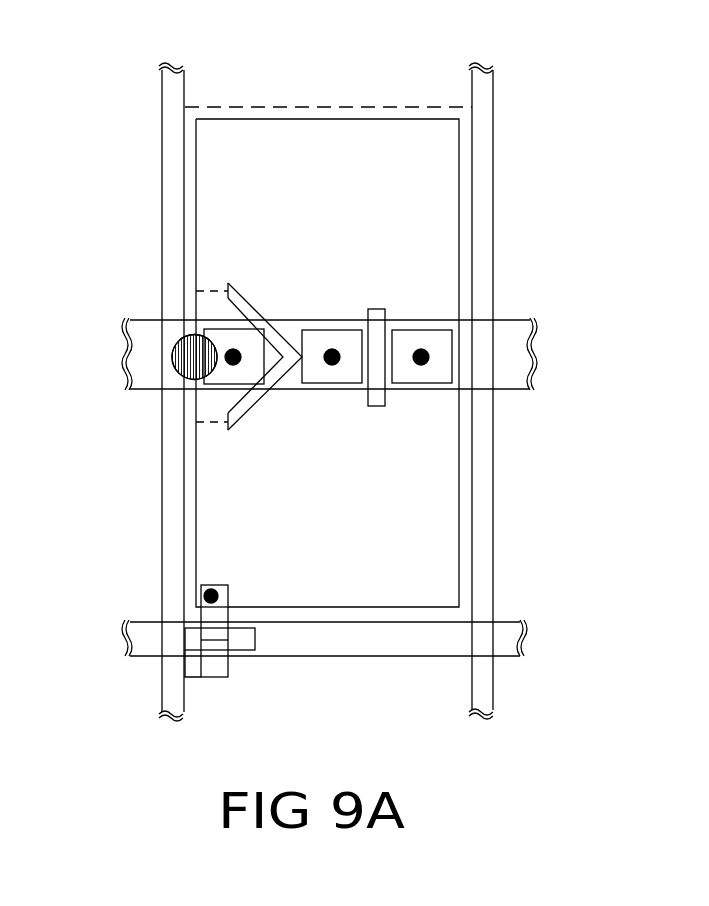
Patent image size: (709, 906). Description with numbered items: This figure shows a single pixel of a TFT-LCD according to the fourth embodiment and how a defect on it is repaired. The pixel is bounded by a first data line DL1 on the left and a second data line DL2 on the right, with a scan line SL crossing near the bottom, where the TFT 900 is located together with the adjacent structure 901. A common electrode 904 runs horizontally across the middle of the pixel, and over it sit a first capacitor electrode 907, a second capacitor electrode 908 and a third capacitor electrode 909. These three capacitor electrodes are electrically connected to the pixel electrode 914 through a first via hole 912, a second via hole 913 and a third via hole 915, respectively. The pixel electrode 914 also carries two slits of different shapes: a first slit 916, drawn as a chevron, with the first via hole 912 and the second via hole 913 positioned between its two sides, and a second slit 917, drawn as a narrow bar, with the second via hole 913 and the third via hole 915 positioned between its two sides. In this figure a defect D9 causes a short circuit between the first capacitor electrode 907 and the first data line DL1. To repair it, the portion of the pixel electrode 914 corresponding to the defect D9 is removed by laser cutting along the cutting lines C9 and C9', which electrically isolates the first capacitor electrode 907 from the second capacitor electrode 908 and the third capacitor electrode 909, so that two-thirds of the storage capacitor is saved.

The first data line DL1 is at (168, 64).
The second data line DL2 is at (484, 64).
The scan line SL is at (127, 640).
The common electrode 904 is at (152, 322).
The defect D9 is at (174, 357).
The first capacitor electrode 907 is at (213, 380).
The first via hole 912 is at (232, 350).
The cutting line C9' is at (328, 199).
The cutting line C9 is at (218, 444).
The pixel electrode 914 is at (452, 153).
The second via hole 913 is at (332, 357).
The second capacitor electrode 908 is at (347, 338).
The second slit 917 is at (378, 312).
The third capacitor electrode 909 is at (421, 357).
The third via hole 915 is at (440, 380).
The first slit 916 is at (248, 402).
The TFT 900 is at (230, 641).
The active layer 901 is at (240, 641).